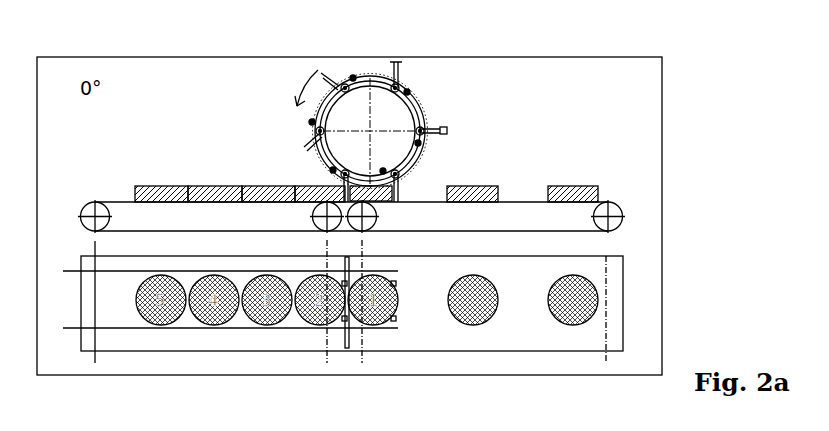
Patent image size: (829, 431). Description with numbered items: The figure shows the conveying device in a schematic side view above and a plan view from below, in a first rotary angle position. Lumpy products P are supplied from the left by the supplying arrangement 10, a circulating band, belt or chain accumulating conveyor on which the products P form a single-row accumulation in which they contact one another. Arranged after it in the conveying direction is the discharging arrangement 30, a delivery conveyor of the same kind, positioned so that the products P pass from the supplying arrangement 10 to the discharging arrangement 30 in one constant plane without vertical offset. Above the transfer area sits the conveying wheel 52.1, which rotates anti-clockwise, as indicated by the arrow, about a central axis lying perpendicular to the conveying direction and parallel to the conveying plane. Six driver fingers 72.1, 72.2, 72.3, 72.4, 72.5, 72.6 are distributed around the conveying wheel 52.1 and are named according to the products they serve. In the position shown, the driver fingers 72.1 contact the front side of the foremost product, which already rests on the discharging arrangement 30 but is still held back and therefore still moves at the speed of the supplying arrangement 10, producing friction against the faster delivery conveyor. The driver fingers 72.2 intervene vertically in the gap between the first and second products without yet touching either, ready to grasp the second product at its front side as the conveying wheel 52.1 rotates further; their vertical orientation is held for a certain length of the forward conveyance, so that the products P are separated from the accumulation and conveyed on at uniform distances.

The supplying arrangement 10 is at (133, 211).
The discharging arrangement 30 is at (553, 226).
The products P is at (165, 190).
The conveying wheel 52.1 is at (418, 112).
The driver finger 72.1 is at (398, 193).
The driver finger 72.2 is at (345, 198).
The driver finger 72.3 is at (305, 149).
The driver finger 72.4 is at (330, 75).
The driver finger 72.5 is at (397, 62).
The driver finger 72.6 is at (443, 131).